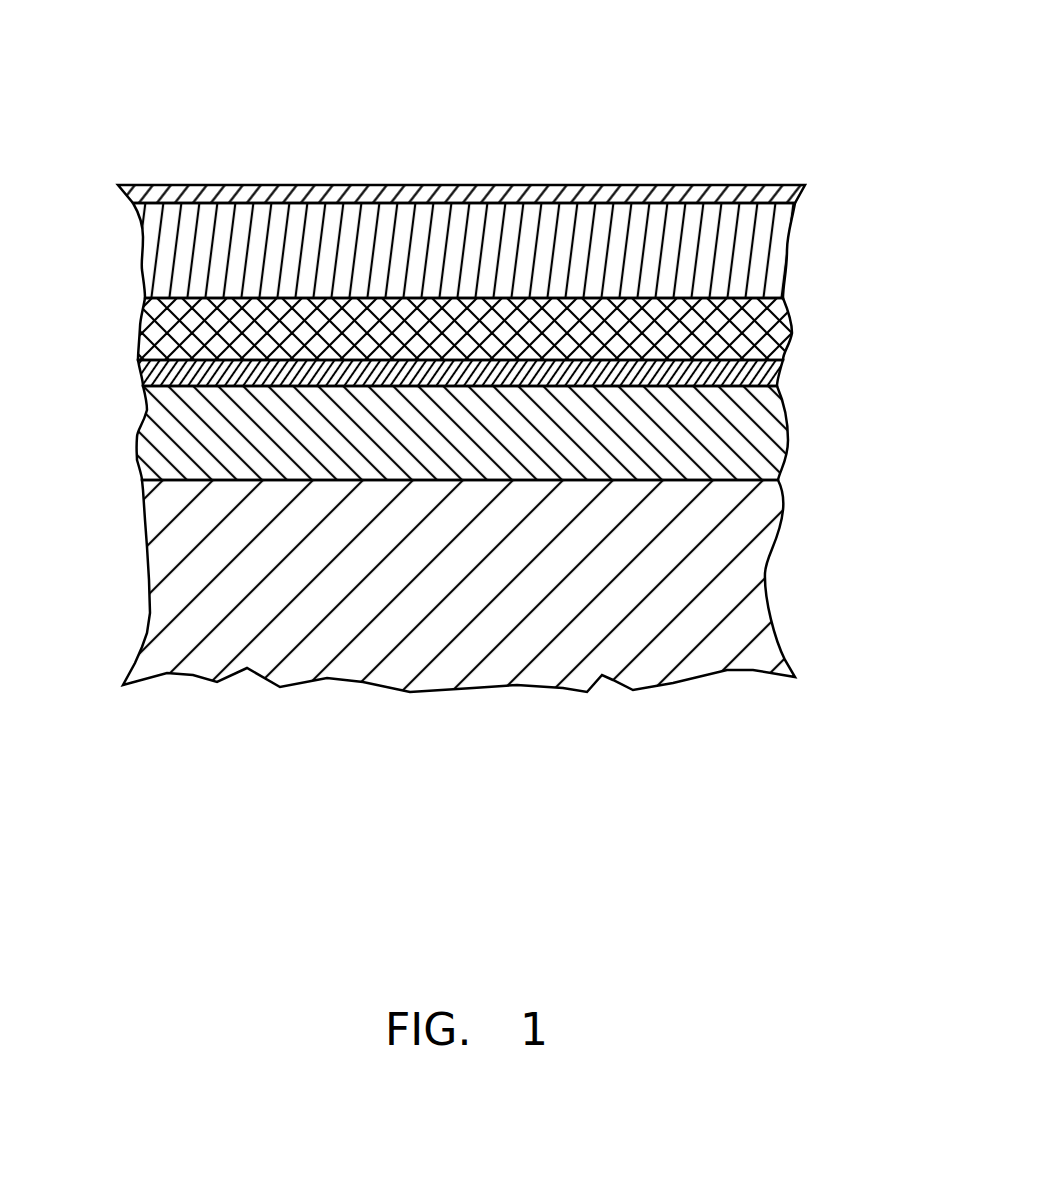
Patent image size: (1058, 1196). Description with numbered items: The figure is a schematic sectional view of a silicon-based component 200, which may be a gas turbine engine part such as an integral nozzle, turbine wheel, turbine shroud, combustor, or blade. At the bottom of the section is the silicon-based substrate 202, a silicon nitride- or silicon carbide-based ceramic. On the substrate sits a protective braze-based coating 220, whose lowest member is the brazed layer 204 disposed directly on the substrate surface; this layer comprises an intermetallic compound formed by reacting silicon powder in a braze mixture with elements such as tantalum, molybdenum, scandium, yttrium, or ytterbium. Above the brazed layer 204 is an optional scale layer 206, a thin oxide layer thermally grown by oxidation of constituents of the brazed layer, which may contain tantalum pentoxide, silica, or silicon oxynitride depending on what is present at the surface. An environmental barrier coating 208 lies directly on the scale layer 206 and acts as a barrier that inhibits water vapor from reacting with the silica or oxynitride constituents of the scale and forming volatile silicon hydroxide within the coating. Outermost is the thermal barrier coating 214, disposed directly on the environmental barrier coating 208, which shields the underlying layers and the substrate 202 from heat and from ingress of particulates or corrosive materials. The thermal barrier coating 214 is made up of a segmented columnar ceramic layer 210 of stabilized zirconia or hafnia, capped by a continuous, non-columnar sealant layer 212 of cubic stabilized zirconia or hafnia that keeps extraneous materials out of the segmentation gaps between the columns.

The silicon-based component 200 is at (472, 354).
The silicon-based substrate 202 is at (735, 533).
The brazed layer 204 is at (758, 443).
The scale layer 206 is at (763, 370).
The environmental barrier coating 208 is at (758, 333).
The segmented columnar ceramic layer 210 is at (778, 272).
The sealant layer 212 is at (788, 184).
The thermal barrier coating 214 is at (525, 237).
The braze-based coating 220 is at (472, 311).